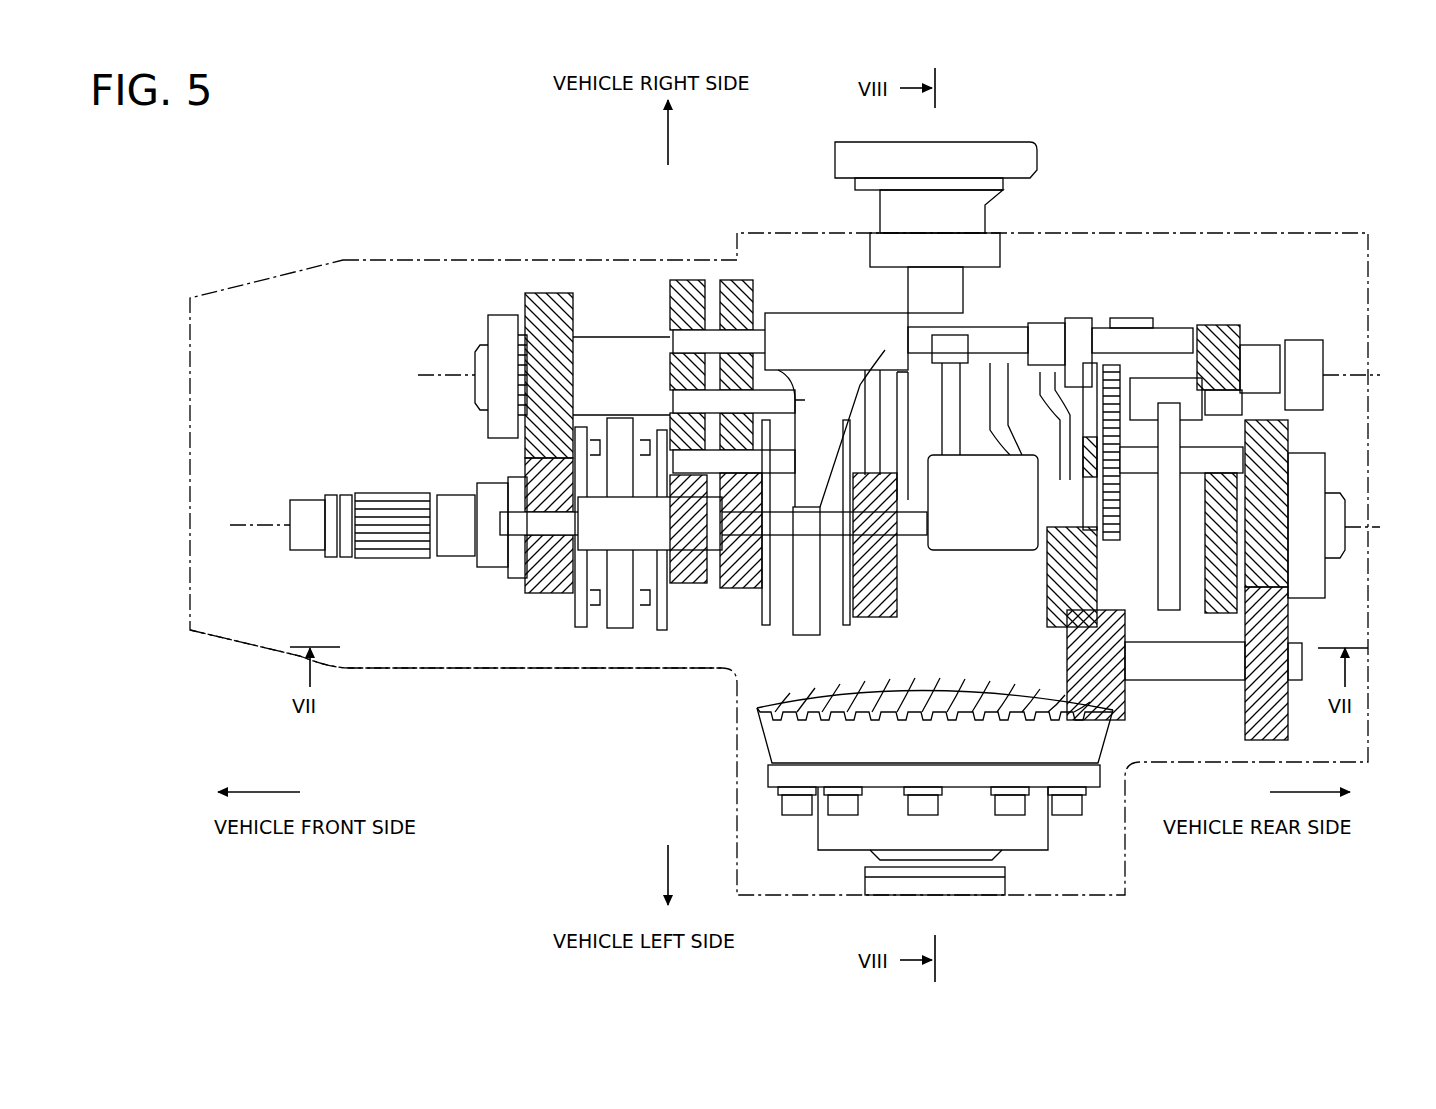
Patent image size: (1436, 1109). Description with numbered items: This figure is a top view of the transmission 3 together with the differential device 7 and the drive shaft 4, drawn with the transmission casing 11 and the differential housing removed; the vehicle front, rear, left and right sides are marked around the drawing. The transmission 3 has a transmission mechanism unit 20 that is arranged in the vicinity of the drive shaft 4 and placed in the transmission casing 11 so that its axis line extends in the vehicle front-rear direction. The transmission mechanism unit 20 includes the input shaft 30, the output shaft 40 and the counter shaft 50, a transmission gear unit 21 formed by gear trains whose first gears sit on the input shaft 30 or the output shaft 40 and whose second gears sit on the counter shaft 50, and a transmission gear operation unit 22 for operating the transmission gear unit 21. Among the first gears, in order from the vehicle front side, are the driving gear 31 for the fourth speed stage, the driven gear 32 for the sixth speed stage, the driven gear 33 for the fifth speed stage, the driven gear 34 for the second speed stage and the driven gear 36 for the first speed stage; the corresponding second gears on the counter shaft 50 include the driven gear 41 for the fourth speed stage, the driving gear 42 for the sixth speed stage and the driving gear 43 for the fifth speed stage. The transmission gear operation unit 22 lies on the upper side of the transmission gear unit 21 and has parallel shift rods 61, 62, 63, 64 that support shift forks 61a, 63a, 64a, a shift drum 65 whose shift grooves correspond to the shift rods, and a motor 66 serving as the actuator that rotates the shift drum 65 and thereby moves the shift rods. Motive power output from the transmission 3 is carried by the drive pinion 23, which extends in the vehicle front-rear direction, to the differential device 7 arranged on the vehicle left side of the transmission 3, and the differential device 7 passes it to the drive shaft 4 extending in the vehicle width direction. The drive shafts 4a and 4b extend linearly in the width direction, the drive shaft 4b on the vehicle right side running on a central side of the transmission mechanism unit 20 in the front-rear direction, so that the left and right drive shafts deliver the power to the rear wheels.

The transmission 3 is at (302, 217).
The transmission casing 11 is at (418, 258).
The transmission gear unit 21 is at (510, 642).
The drive shaft 4 is at (975, 511).
The drive shaft 4a is at (1005, 880).
The drive shaft 4b is at (1003, 150).
The transmission mechanism unit 20 is at (448, 336).
The counter shaft 50 is at (468, 398).
The driven gear for the fourth speed stage 41 is at (555, 290).
The driving gear for the sixth speed stage 42 is at (688, 280).
The driving gear for the fifth speed stage 43 is at (738, 285).
The shift rod 64 is at (737, 338).
The shift rod 62 is at (690, 455).
The shift rod 63 is at (695, 398).
The transmission gear operation unit 22 is at (1088, 494).
The driven gear for the first speed stage 36 is at (1060, 625).
The motor 66 is at (947, 540).
The shift drum 65 is at (1055, 345).
The shift fork 63a is at (1170, 610).
The output shaft 40 is at (1350, 545).
The input shaft 30 is at (305, 550).
The driving gear for the fourth speed stage 31 is at (701, 564).
The shift rod 61 is at (510, 570).
The shift fork 61a is at (622, 620).
The driven gear for the sixth speed stage 32 is at (690, 583).
The driven gear for the fifth speed stage 33 is at (745, 588).
The shift fork 64a is at (803, 635).
The driven gear for the second speed stage 34 is at (865, 617).
The differential device 7 is at (936, 764).
The drive pinion 23 is at (1125, 700).